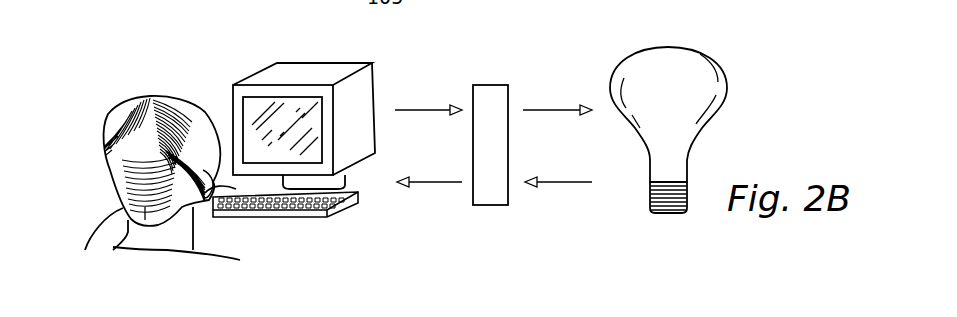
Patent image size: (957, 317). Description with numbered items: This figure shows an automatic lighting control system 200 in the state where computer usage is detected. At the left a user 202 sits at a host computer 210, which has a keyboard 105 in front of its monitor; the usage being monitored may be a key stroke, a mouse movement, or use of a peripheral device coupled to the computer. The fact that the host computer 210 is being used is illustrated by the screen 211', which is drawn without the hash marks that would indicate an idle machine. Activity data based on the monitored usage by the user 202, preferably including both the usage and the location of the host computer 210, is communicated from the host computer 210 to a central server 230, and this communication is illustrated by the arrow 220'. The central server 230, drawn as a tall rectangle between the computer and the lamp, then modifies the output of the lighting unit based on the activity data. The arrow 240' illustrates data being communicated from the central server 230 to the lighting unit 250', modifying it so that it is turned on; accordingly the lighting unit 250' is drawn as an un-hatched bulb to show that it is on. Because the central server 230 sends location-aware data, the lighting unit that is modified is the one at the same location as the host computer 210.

The automatic lighting control system 200 is at (143, 37).
The user 202 is at (114, 124).
The keyboard 105 is at (343, 207).
The host computer 210 is at (263, 71).
The screen 211' is at (245, 110).
The arrow 220' is at (428, 122).
The central server 230 is at (490, 80).
The arrow 240' is at (557, 119).
The lighting unit 250' is at (668, 106).